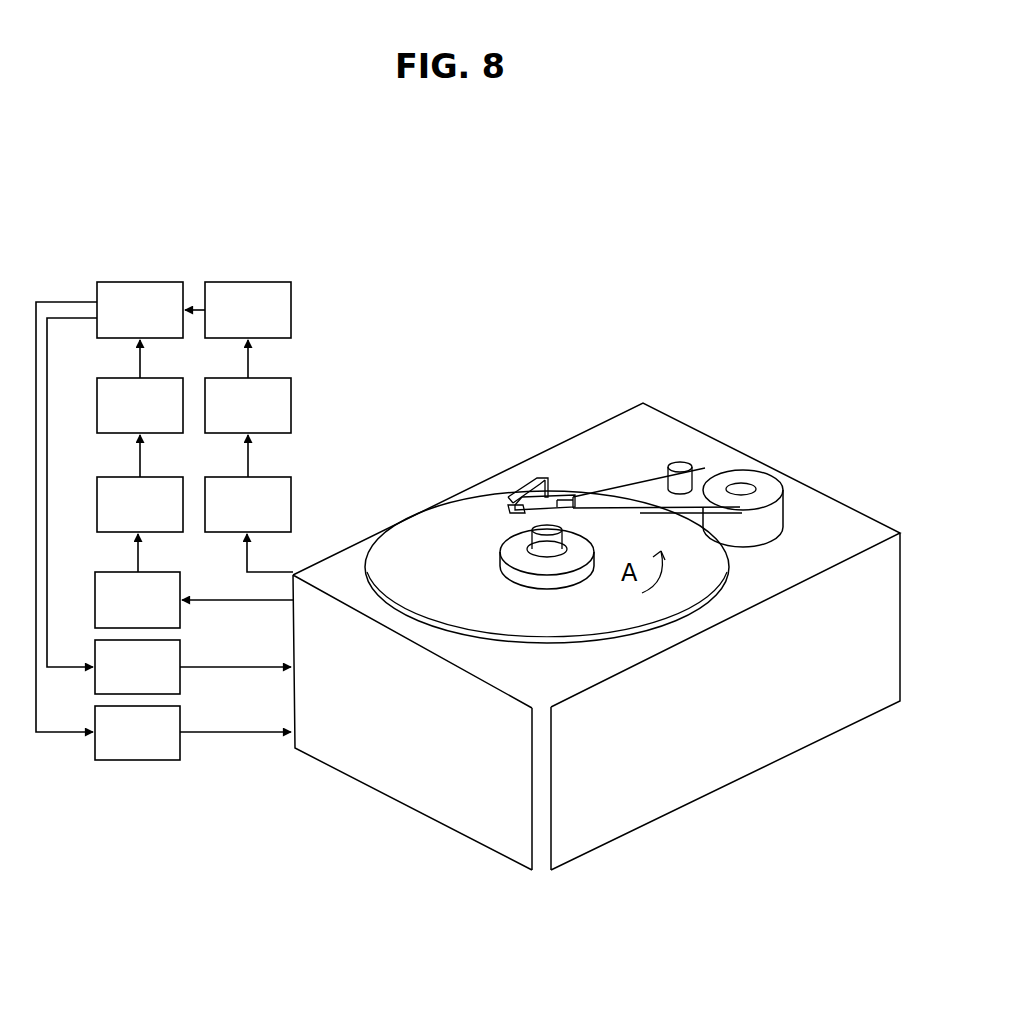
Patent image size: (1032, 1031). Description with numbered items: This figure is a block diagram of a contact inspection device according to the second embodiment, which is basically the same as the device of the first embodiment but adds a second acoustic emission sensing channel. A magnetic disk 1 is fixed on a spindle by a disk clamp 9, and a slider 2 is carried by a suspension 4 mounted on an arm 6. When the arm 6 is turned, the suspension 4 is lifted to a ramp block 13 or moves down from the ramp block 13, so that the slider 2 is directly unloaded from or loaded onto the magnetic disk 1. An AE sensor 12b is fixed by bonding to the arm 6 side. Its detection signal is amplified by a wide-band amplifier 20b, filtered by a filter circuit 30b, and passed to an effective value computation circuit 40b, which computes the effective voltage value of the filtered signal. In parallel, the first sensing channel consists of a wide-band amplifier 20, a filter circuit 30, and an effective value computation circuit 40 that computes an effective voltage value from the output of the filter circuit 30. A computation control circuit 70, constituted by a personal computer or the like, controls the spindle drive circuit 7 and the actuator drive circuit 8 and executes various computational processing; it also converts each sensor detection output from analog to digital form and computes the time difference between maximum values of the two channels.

The magnetic disk 1 is at (437, 537).
The slider 2 is at (543, 503).
The suspension 4 is at (560, 497).
The arm 6 is at (630, 493).
The spindle drive circuit 7 is at (147, 683).
The actuator drive circuit 8 is at (147, 749).
The disk clamp 9 is at (510, 547).
The AE sensor 12b is at (677, 482).
The ramp block 13 is at (530, 482).
The wide-band amplifier 20 is at (156, 616).
The wide-band amplifier 20b is at (275, 520).
The filter circuit 30 is at (158, 520).
The filter circuit 30b is at (275, 421).
The effective value computation circuit 40 is at (158, 421).
The effective value computation circuit 40b is at (275, 326).
The computation control circuit 70 is at (158, 326).